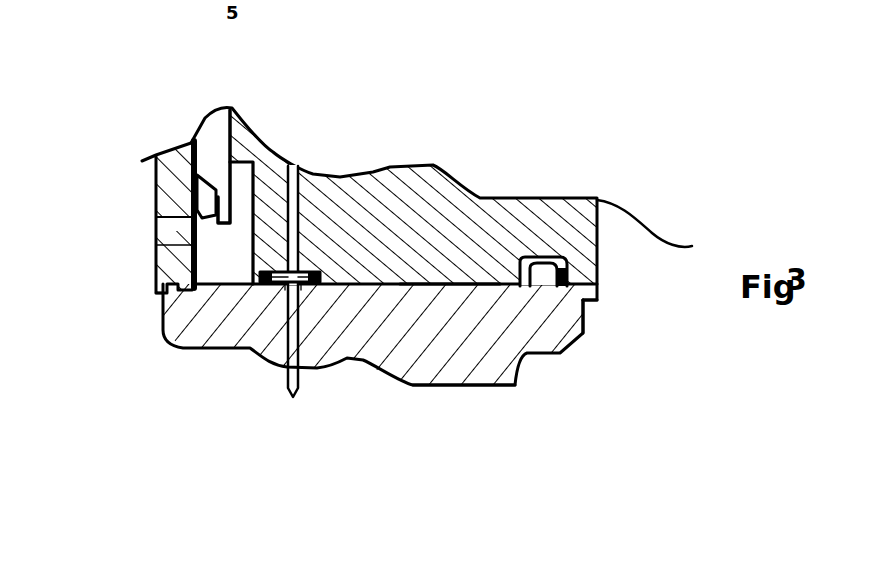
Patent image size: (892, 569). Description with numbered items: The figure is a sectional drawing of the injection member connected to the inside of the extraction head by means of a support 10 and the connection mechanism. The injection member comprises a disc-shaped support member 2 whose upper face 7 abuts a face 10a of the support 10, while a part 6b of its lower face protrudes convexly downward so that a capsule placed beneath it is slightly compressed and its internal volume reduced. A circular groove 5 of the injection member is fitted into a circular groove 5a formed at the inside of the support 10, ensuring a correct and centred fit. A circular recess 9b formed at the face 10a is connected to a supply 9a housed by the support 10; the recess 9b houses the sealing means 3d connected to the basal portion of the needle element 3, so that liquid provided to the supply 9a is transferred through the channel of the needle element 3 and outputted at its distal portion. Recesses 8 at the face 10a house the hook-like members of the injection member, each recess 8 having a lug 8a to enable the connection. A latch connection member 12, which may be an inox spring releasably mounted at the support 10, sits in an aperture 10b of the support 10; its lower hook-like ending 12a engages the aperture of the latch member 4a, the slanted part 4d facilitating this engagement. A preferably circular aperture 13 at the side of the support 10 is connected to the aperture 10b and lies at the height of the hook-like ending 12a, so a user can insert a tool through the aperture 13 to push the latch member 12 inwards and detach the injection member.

The support member 2 is at (518, 340).
The needle element 3 is at (290, 383).
The sealing means 3d is at (268, 282).
The latch member 4a is at (203, 267).
The slanted part 4d is at (190, 172).
The circular groove 5 is at (587, 309).
The circular groove 5a is at (565, 296).
The protruding part of the lower face 6b is at (540, 270).
The upper face 7 is at (380, 245).
The recesses 8 is at (528, 262).
The lug 8a is at (575, 285).
The supply 9a is at (293, 270).
The circular recess 9b is at (318, 282).
The support 10 is at (167, 200).
The face of the support 10a is at (452, 280).
The aperture of the support 10b is at (237, 165).
The latch connection member 12 is at (217, 195).
The hook-like ending 12a is at (192, 229).
The aperture 13 is at (171, 243).